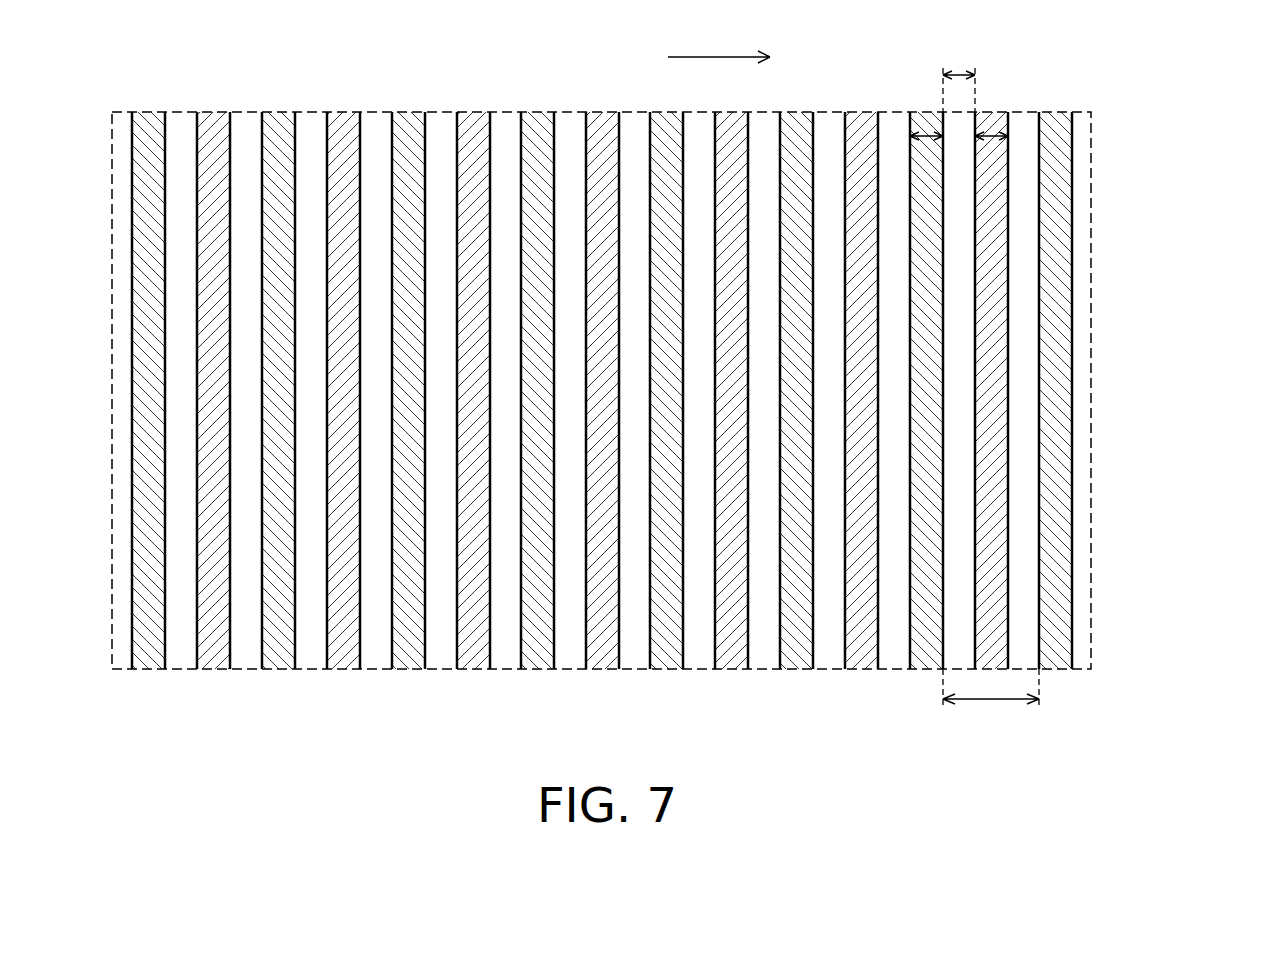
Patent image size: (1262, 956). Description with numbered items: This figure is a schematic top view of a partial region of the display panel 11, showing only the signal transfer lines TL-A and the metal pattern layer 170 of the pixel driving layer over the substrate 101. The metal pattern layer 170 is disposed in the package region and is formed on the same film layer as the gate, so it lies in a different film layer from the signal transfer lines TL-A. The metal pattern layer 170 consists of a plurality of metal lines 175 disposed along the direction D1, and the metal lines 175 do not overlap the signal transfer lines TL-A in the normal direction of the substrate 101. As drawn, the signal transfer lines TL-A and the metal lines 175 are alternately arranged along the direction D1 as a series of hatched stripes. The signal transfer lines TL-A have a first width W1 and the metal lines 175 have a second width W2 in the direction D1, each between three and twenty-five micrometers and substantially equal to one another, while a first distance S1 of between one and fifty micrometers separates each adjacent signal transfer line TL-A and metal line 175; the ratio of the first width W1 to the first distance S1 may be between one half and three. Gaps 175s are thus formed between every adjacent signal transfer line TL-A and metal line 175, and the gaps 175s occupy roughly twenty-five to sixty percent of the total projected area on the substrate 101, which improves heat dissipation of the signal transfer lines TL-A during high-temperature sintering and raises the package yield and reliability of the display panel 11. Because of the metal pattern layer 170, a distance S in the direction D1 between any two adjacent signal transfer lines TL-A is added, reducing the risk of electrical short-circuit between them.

The substrate 101 is at (1083, 168).
The metal pattern layer 170 is at (678, 352).
The metal lines 175 is at (678, 352).
The signal transfer line TL-A is at (1055, 320).
The gaps 175s is at (1034, 449).
The first width W1 is at (926, 132).
The second width W2 is at (990, 132).
The first distance S1 is at (959, 74).
The distance S is at (991, 704).
The direction D1 is at (719, 42).
The display panel 11 is at (1197, 749).